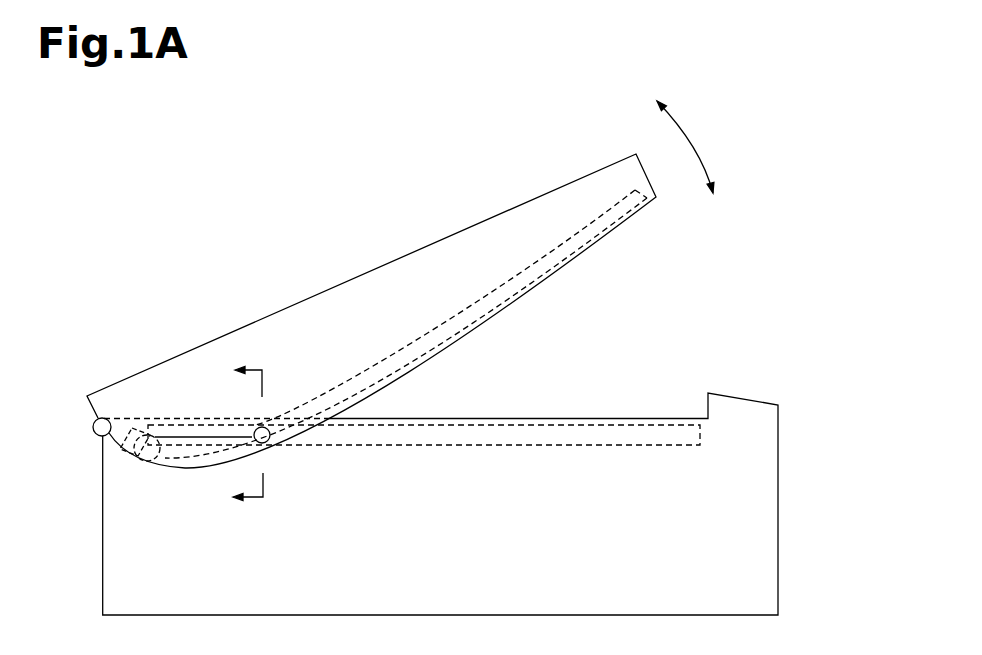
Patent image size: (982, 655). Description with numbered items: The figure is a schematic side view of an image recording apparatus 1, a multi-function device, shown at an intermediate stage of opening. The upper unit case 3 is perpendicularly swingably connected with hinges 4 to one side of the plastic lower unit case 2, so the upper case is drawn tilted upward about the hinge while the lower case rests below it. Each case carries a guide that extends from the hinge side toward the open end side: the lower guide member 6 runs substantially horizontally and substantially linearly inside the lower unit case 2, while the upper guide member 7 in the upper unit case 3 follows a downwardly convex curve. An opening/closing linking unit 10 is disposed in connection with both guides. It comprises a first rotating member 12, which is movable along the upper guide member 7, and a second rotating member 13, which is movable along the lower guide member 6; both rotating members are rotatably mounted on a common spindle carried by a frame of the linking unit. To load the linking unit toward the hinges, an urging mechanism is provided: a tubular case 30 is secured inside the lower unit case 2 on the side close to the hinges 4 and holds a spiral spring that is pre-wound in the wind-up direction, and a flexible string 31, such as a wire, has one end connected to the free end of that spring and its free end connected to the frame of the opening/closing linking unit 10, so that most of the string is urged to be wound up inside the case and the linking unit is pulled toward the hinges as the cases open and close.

The image recording apparatus 1 is at (440, 358).
The lower unit case 2 is at (760, 483).
The upper unit case 3 is at (565, 193).
The hinge 4 is at (93, 428).
The lower guide member 6 is at (565, 440).
The upper guide member 7 is at (530, 284).
The opening/closing linking unit 10 is at (444, 316).
The first rotating member 12 is at (445, 307).
The second rotating member 13 is at (266, 420).
The case 30 is at (143, 462).
The string 31 is at (188, 437).